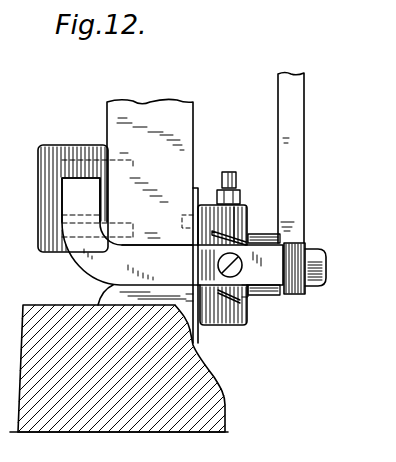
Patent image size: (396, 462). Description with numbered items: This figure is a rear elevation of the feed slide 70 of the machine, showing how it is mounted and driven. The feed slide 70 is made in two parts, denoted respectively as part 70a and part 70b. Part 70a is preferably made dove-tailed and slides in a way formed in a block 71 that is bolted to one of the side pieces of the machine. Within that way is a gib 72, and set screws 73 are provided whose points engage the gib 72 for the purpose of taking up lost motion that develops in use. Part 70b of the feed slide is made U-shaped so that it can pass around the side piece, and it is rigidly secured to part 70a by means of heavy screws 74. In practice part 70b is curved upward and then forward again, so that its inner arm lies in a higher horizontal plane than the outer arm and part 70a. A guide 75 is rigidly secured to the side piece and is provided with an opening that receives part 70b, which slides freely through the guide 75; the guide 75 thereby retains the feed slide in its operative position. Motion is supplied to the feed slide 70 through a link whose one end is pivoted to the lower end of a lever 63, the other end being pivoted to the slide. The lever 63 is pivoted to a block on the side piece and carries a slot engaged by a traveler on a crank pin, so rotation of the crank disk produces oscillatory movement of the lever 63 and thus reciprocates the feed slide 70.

The lever 63 is at (297, 163).
The feed slide 70 is at (172, 231).
The part of feed slide 70a is at (234, 288).
The part of feed slide 70b is at (67, 190).
The block 71 is at (208, 203).
The gib 72 is at (244, 240).
The set screws 73 is at (235, 173).
The heavy screws 74 is at (241, 268).
The guide 75 is at (82, 145).